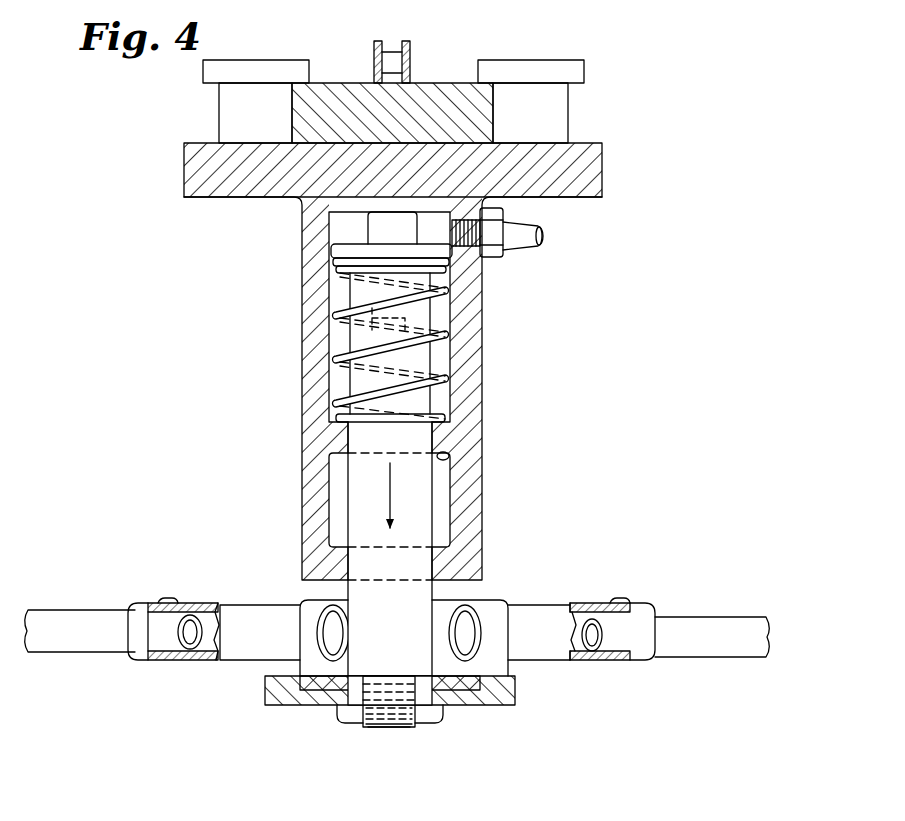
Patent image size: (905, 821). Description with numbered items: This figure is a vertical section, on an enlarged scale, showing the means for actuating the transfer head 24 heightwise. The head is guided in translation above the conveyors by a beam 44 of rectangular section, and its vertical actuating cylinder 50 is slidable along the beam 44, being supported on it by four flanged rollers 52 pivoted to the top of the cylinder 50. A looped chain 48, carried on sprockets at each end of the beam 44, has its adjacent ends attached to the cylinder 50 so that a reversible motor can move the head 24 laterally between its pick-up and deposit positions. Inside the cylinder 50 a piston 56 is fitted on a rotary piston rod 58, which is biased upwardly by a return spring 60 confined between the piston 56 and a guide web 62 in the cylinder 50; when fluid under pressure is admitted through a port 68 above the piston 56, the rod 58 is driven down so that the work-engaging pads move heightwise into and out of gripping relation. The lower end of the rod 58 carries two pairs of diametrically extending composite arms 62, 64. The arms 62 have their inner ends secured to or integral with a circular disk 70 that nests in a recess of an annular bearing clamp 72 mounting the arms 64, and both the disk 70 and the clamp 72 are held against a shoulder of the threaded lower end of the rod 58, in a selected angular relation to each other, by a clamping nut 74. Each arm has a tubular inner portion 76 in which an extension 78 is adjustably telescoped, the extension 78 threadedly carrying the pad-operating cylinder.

The transfer head 24 is at (566, 350).
The beam 44 is at (338, 83).
The looped chain 48 is at (412, 56).
The actuating cylinder 50 is at (482, 494).
The flanged rollers 52 is at (219, 106).
The piston 56 is at (350, 242).
The rotary piston rod 58 is at (436, 596).
The return spring 60 is at (445, 338).
The guide web / composite arms 62 is at (451, 457).
The composite arms 64 is at (722, 591).
The port 68 is at (503, 232).
The circular disk 70 is at (352, 676).
The annular bearing clamp 72 is at (515, 694).
The clamping nut 74 is at (430, 724).
The tubular inner portion 76 is at (276, 603).
The extension 78 is at (92, 660).